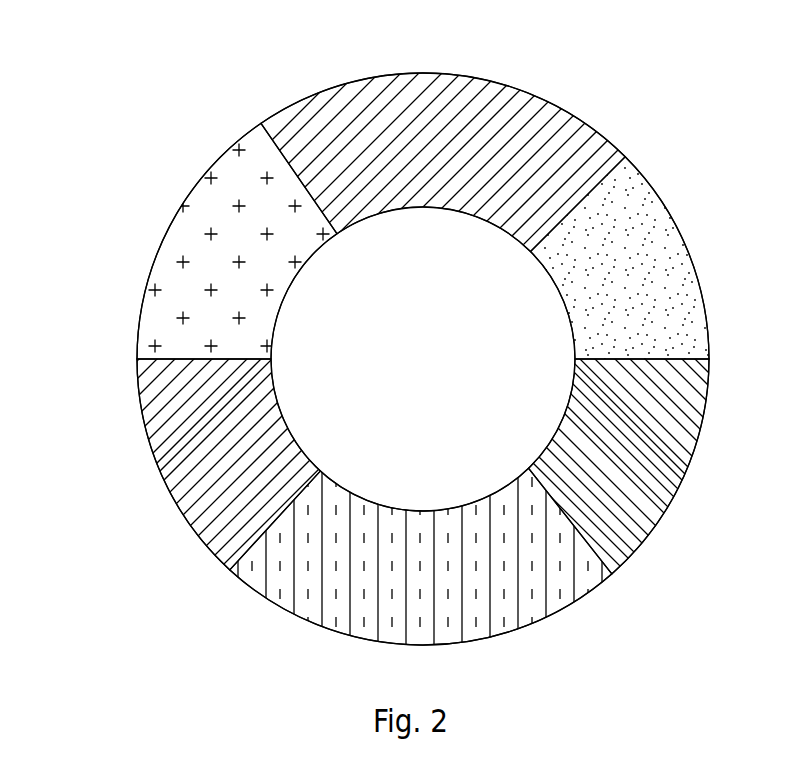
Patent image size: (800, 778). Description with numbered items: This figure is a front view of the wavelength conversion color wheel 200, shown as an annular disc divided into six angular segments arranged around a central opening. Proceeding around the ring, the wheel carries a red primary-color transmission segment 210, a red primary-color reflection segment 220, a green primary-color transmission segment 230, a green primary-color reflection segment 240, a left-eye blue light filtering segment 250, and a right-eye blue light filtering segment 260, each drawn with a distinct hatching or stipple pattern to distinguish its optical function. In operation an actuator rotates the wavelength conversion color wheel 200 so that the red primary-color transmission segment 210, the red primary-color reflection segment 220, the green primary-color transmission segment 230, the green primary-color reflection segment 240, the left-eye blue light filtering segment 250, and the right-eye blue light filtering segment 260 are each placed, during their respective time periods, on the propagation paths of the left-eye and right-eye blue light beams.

The wavelength conversion color wheel 200 is at (60, 50).
The red primary-color transmission segment 210 is at (653, 232).
The red primary-color reflection segment 220 is at (193, 488).
The green primary-color transmission segment 230 is at (427, 95).
The green primary-color reflection segment 240 is at (420, 622).
The left-eye blue light filtering segment 250 is at (198, 225).
The right-eye blue light filtering segment 260 is at (657, 503).